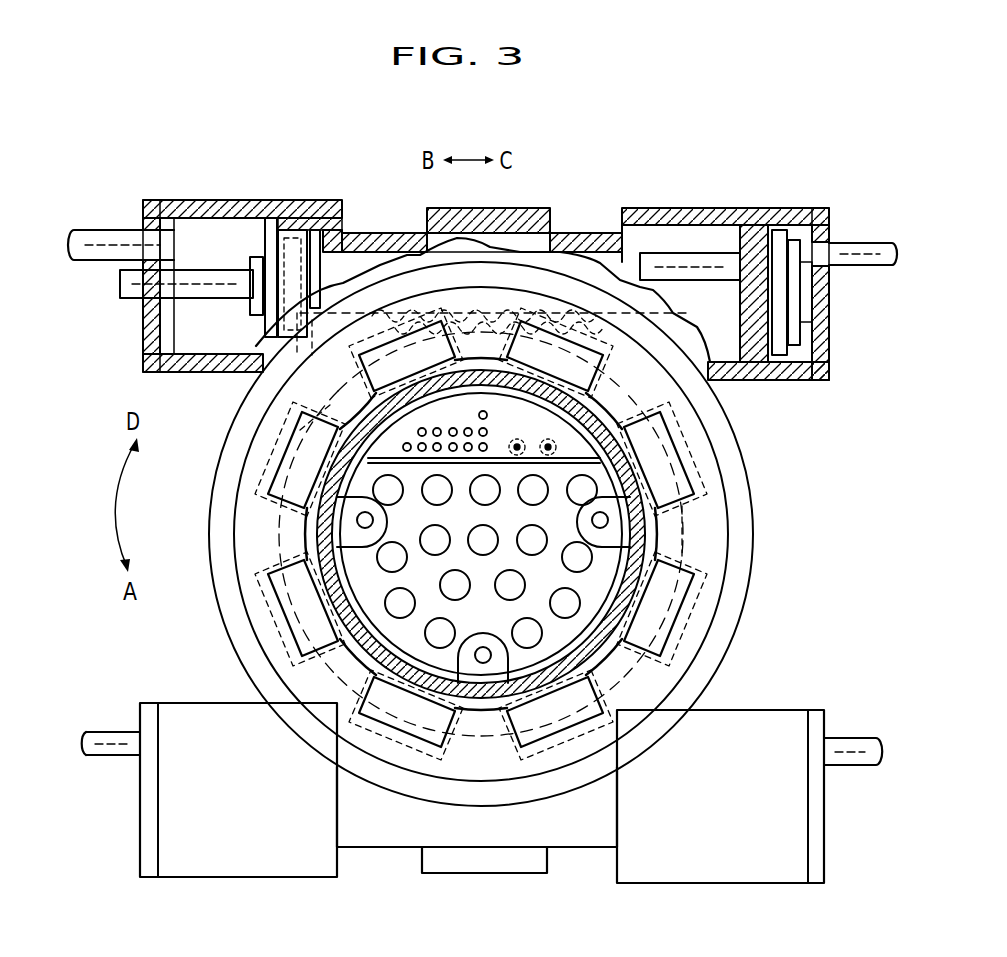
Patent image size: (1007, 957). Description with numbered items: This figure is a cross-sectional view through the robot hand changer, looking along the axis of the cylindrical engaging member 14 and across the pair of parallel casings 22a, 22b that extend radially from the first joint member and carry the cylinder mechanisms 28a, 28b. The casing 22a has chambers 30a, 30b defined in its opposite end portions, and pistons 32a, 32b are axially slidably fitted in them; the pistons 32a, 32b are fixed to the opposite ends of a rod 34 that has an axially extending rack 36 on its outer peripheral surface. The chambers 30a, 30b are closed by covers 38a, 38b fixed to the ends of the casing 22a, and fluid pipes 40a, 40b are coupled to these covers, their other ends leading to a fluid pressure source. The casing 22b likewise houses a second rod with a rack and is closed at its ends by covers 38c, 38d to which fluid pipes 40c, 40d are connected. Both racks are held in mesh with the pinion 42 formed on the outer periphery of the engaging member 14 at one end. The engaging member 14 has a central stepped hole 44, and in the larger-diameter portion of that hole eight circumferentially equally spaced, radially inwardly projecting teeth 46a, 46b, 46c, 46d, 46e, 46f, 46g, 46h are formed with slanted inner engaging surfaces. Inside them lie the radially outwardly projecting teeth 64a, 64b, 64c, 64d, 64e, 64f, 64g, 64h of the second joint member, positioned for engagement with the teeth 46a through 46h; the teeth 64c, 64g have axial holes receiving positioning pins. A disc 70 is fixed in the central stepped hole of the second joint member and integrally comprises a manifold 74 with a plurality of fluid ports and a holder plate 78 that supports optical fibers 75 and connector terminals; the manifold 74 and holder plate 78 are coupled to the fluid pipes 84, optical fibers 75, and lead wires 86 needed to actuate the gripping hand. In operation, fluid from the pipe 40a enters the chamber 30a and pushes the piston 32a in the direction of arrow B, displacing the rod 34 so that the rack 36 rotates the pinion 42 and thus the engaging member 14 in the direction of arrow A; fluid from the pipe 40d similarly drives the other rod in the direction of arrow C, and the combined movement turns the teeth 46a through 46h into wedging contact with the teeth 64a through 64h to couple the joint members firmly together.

The engaging member 14 is at (766, 556).
The casing 22a is at (562, 234).
The casing 22b is at (580, 828).
The cylinder mechanism 28a is at (338, 198).
The cylinder mechanism 28b is at (283, 862).
The chamber 30a is at (706, 240).
The chamber 30b is at (202, 240).
The piston 32a is at (764, 246).
The piston 32b is at (286, 222).
The rod 34 is at (650, 268).
The rack 36 is at (703, 393).
The cover 38a is at (812, 342).
The cover 38b is at (152, 326).
The cover 38c is at (820, 835).
The cover 38d is at (153, 805).
The fluid pipe 40a is at (862, 243).
The fluid pipe 40b is at (106, 232).
The fluid pipe 40c is at (856, 746).
The fluid pipe 40d is at (116, 740).
The pinion 42 is at (606, 410).
The stepped hole 44 is at (670, 483).
The tooth 46a is at (512, 345).
The tooth 46b is at (612, 400).
The tooth 46c is at (673, 523).
The tooth 46d is at (650, 682).
The tooth 46e is at (467, 730).
The tooth 46f is at (320, 700).
The tooth 46g is at (306, 550).
The tooth 46h is at (316, 440).
The tooth 64a is at (470, 345).
The tooth 64b is at (659, 460).
The tooth 64c is at (782, 595).
The tooth 64d is at (770, 635).
The tooth 64e is at (624, 792).
The tooth 64f is at (330, 708).
The tooth 64g is at (290, 600).
The tooth 64h is at (407, 356).
The disc 70 is at (345, 521).
The manifold 74 is at (585, 690).
The optical fibers 75 is at (468, 450).
The holder plate 78 is at (555, 356).
The fluid pipes 84 is at (490, 545).
The lead wires 86 is at (517, 456).